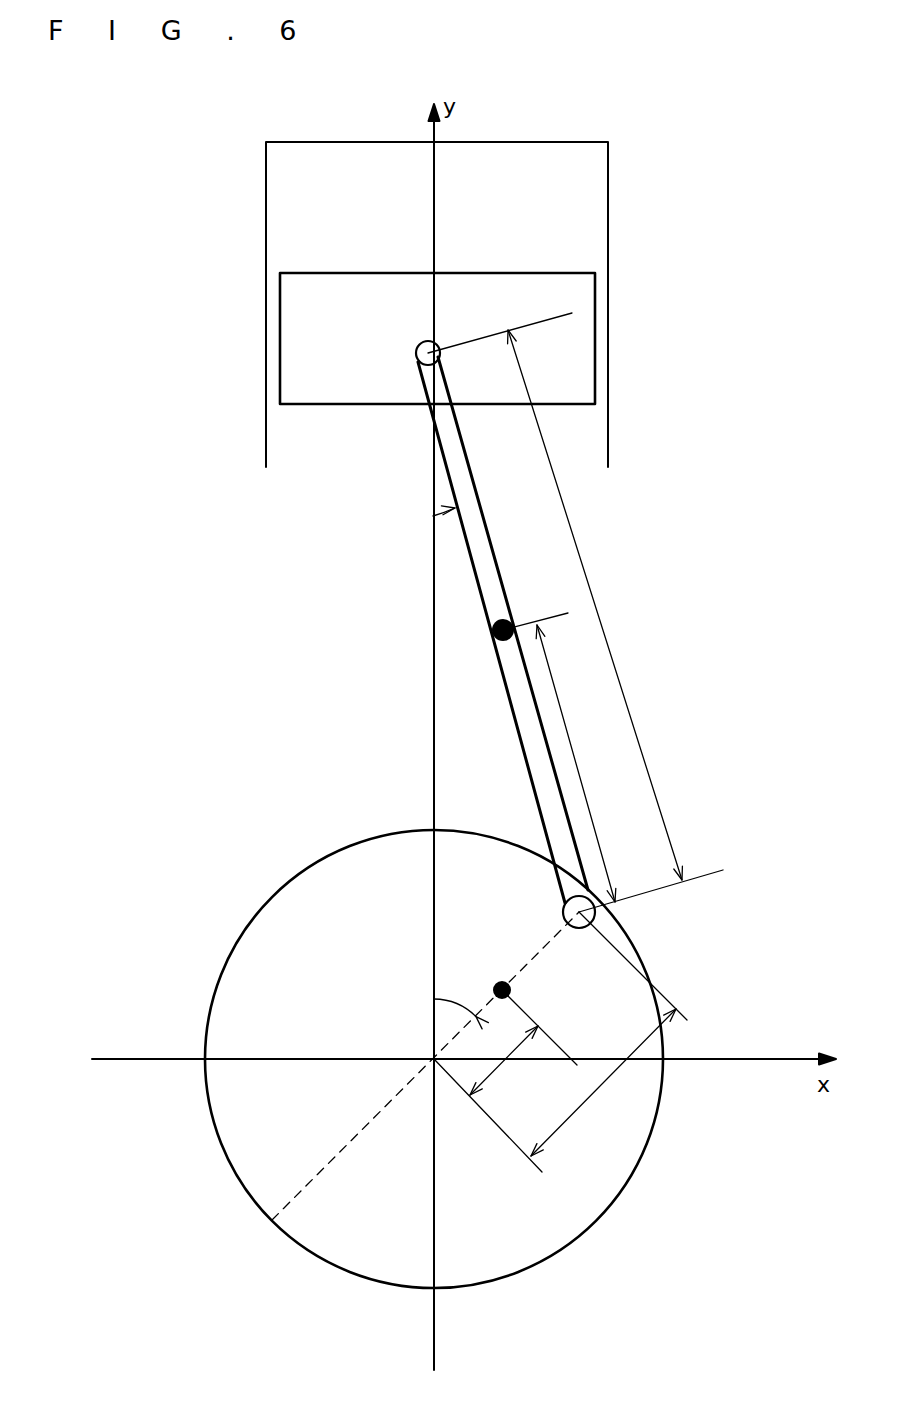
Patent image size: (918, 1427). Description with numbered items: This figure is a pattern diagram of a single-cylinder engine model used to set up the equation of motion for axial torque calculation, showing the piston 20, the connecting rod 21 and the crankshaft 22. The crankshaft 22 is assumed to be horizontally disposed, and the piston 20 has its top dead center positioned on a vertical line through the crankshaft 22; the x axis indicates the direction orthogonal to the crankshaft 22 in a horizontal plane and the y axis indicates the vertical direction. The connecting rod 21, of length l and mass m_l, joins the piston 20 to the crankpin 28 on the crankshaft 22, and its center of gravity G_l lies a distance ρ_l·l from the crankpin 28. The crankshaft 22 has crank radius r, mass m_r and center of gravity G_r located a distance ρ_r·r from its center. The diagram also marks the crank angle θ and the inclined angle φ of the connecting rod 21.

The piston 20 is at (492, 272).
The connecting rod 21 is at (485, 501).
The crankshaft 22 is at (278, 888).
The crankpin 28 is at (563, 912).